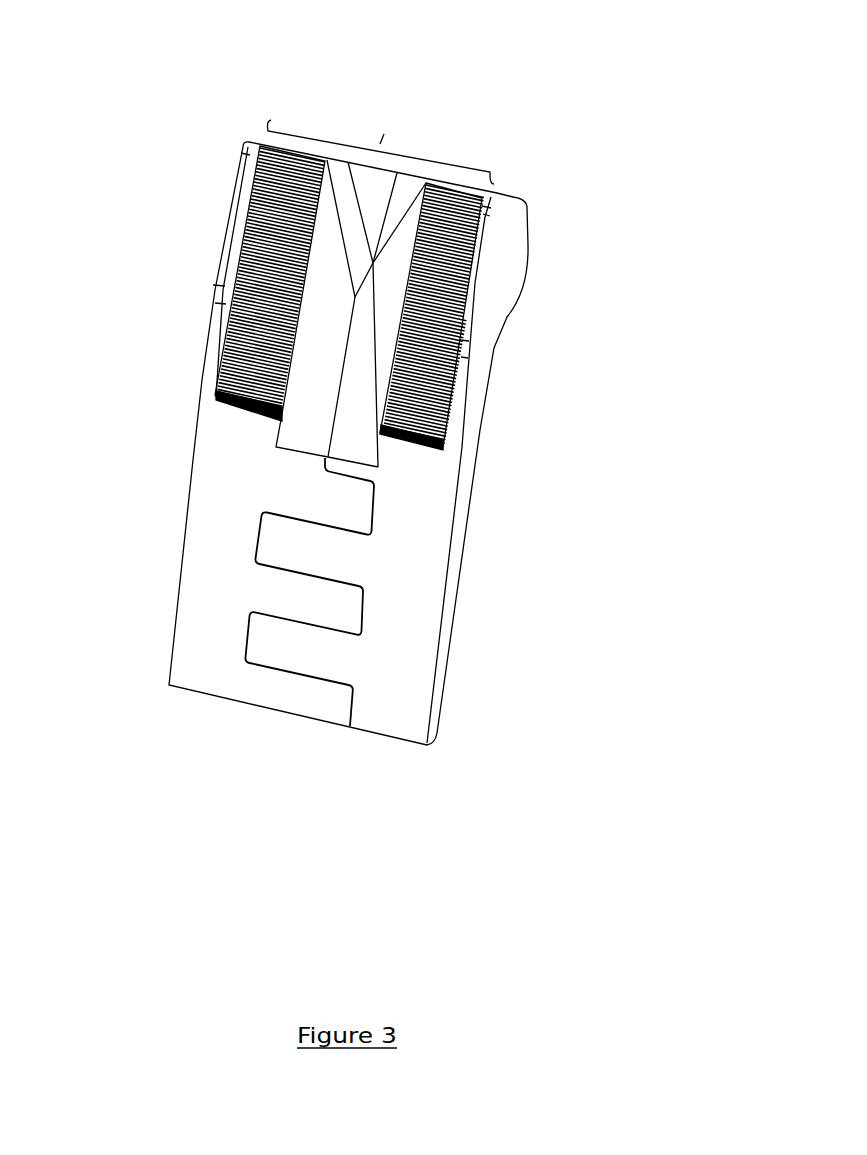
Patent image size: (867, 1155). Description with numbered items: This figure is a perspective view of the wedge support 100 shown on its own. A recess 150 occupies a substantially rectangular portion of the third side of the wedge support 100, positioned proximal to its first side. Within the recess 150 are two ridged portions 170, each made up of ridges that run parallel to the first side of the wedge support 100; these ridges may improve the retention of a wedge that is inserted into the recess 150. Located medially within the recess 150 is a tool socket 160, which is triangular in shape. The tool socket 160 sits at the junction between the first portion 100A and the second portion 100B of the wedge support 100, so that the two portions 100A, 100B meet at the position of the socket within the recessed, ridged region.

The wedge support 100 is at (150, 82).
The first portion 100A is at (232, 184).
The second portion 100B is at (528, 262).
The recess 150 is at (380, 143).
The tool socket 160 is at (372, 206).
The ridged portions 170 is at (242, 267).